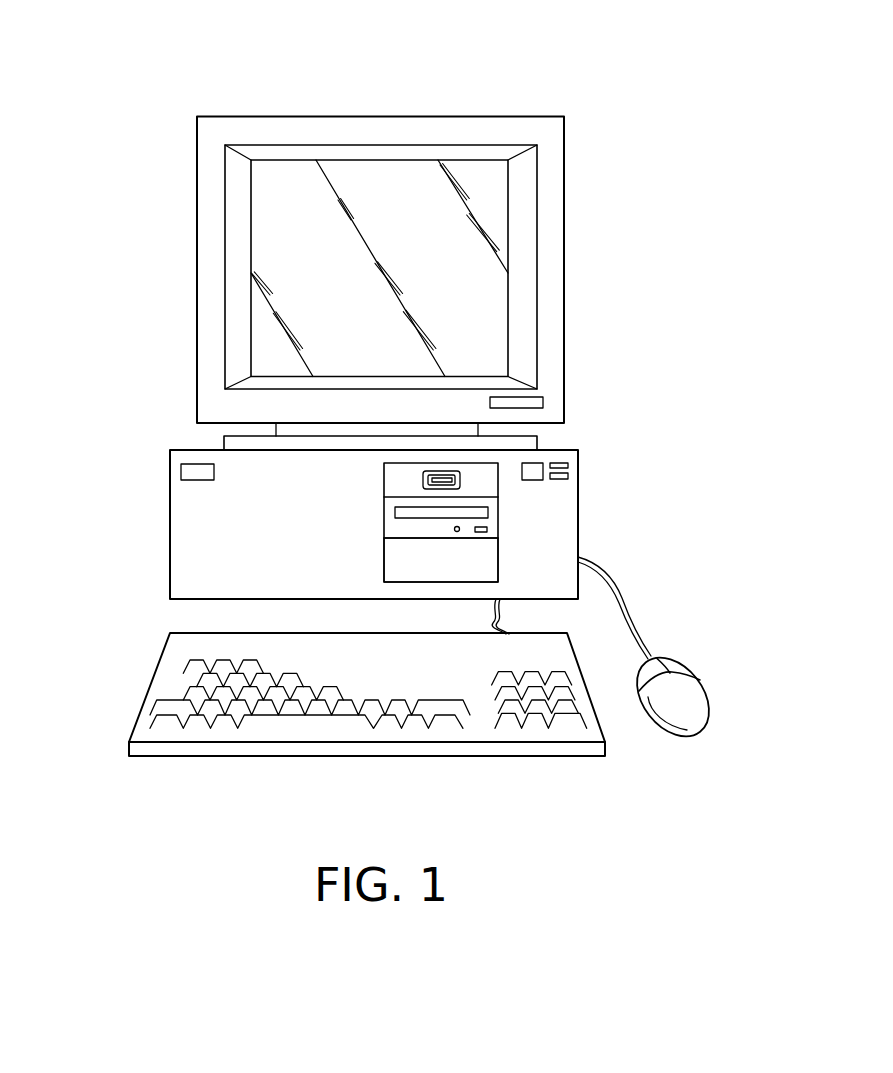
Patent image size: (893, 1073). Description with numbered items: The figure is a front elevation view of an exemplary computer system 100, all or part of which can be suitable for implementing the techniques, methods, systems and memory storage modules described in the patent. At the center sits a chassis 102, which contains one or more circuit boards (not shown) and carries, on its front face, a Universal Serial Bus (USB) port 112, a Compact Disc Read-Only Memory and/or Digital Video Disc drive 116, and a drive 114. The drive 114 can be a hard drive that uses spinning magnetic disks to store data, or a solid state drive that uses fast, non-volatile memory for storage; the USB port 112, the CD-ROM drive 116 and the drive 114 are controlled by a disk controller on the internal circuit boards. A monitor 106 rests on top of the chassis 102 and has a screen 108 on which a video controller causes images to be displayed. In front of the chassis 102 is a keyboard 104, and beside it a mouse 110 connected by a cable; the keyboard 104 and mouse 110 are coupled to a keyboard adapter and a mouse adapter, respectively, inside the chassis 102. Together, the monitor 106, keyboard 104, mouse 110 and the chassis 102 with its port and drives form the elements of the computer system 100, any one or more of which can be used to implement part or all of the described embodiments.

The computer system 100 is at (558, 92).
The chassis 102 is at (170, 525).
The keyboard 104 is at (153, 682).
The monitor 106 is at (270, 116).
The screen 108 is at (297, 272).
The mouse 110 is at (695, 685).
The Universal Serial Bus (USB) port 112 is at (460, 475).
The drive 114 is at (490, 560).
The CD-ROM and/or DVD drive 116 is at (490, 518).